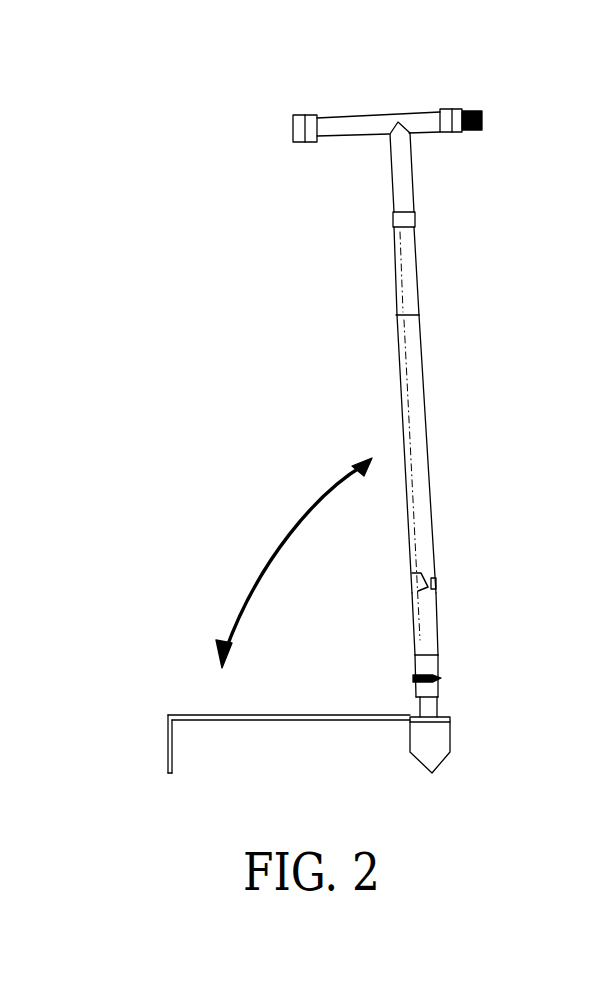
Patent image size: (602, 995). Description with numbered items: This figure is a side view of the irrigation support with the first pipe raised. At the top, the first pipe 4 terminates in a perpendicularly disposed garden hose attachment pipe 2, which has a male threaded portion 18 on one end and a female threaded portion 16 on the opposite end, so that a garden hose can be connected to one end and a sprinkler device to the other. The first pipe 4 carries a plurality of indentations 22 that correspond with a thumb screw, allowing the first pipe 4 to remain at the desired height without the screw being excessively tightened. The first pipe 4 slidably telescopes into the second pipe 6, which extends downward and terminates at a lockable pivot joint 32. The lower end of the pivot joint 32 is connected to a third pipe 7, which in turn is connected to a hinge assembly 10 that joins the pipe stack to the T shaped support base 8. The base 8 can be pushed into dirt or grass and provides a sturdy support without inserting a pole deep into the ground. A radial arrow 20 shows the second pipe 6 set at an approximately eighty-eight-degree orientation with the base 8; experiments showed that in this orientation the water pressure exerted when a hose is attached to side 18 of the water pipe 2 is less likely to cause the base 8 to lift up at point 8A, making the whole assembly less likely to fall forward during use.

The garden hose attachment pipe 2 is at (483, 67).
The female threaded portion 16 is at (491, 116).
The male threaded portion 18 is at (290, 132).
The indentations 22 is at (413, 218).
The first pipe 4 is at (412, 267).
The second pipe 6 is at (435, 428).
The pivot joint 32 is at (440, 573).
The third pipe 7 is at (405, 627).
The hinge assembly 10 is at (450, 673).
The radial arrow 20 is at (273, 527).
The T shaped support base 8 is at (117, 698).
The point 8A is at (178, 707).